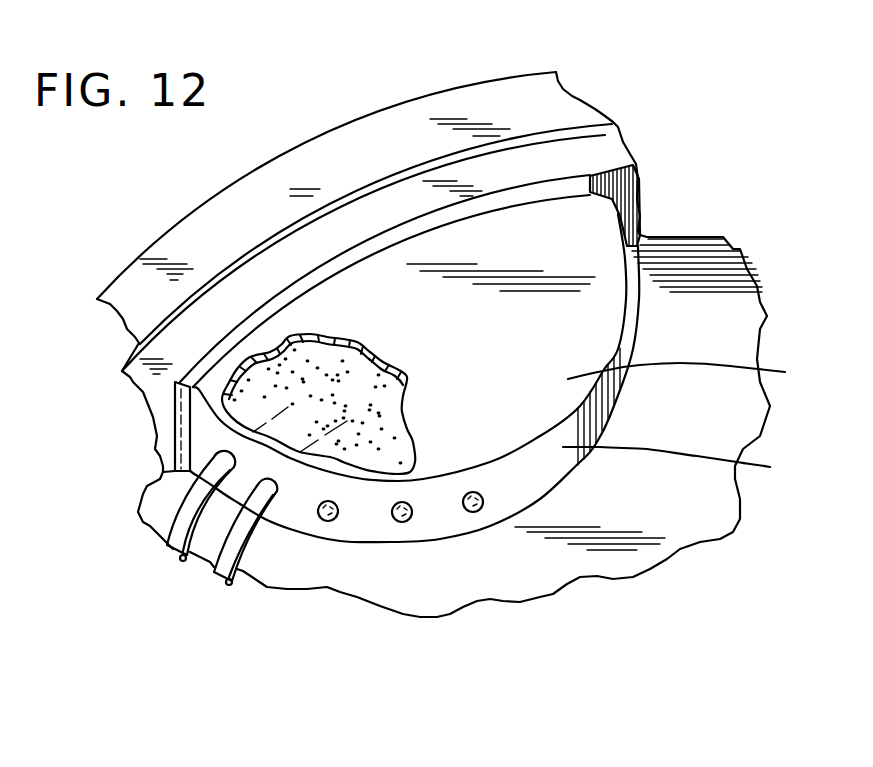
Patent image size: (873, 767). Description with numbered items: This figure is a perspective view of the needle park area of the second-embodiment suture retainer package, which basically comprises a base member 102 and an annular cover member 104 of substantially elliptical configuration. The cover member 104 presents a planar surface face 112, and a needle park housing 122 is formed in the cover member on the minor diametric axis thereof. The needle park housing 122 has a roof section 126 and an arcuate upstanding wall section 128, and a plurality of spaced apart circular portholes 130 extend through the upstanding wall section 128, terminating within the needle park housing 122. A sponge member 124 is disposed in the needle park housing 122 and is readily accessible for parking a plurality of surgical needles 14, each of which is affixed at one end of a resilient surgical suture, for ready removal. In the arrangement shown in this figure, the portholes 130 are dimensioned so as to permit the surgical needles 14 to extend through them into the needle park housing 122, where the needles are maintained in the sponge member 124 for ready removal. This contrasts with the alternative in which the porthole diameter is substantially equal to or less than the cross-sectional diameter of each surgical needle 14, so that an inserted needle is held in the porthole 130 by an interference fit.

The surgical needle 14 is at (192, 506).
The base member 102 is at (562, 77).
The annular cover member 104 is at (608, 147).
The planar surface face 112 is at (703, 327).
The needle park housing 122 is at (612, 212).
The sponge member 124 is at (290, 380).
The roof section 126 is at (704, 377).
The arcuate upstanding wall section 128 is at (693, 468).
The circular portholes 130 is at (328, 522).